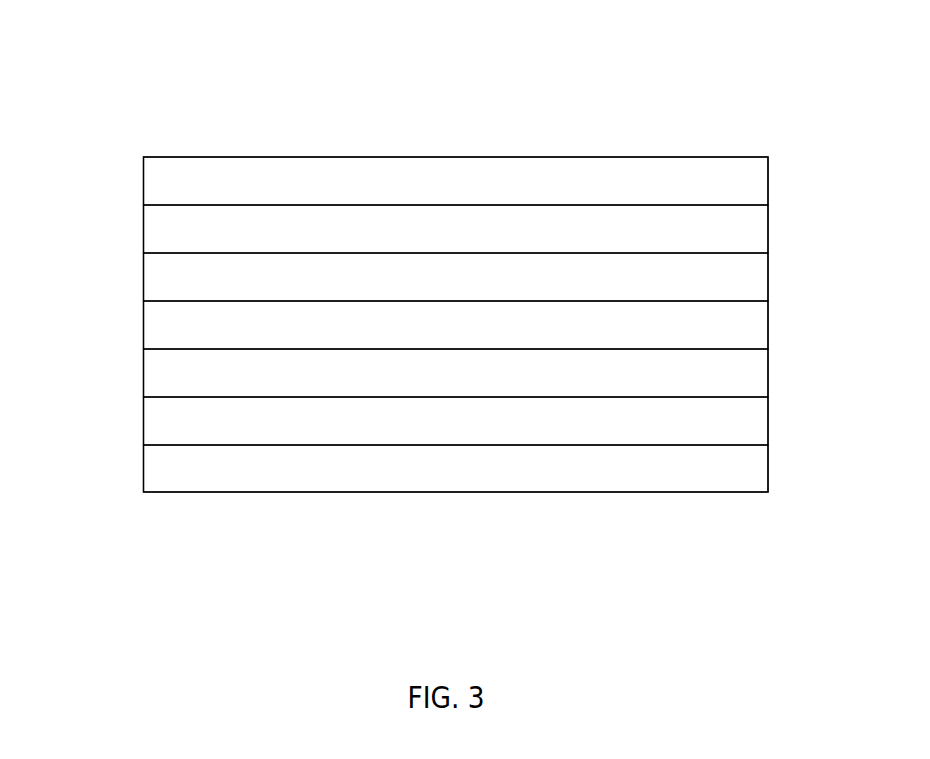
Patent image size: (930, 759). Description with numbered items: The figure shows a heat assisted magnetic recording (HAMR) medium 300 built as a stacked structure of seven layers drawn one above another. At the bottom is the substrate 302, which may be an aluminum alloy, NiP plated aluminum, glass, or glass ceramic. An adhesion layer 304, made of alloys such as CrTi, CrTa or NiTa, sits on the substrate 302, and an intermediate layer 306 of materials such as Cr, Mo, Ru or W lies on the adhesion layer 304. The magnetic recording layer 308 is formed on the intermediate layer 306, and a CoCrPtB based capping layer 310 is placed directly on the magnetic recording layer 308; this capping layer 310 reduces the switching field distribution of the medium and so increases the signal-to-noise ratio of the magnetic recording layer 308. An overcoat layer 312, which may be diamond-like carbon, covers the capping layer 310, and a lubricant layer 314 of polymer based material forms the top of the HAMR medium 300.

The HAMR medium 300 is at (146, 57).
The substrate 302 is at (768, 470).
The adhesion layer 304 is at (768, 422).
The intermediate layer 306 is at (768, 374).
The magnetic recording layer 308 is at (768, 326).
The capping layer 310 is at (768, 278).
The overcoat layer 312 is at (768, 230).
The lubricant layer 314 is at (768, 182).